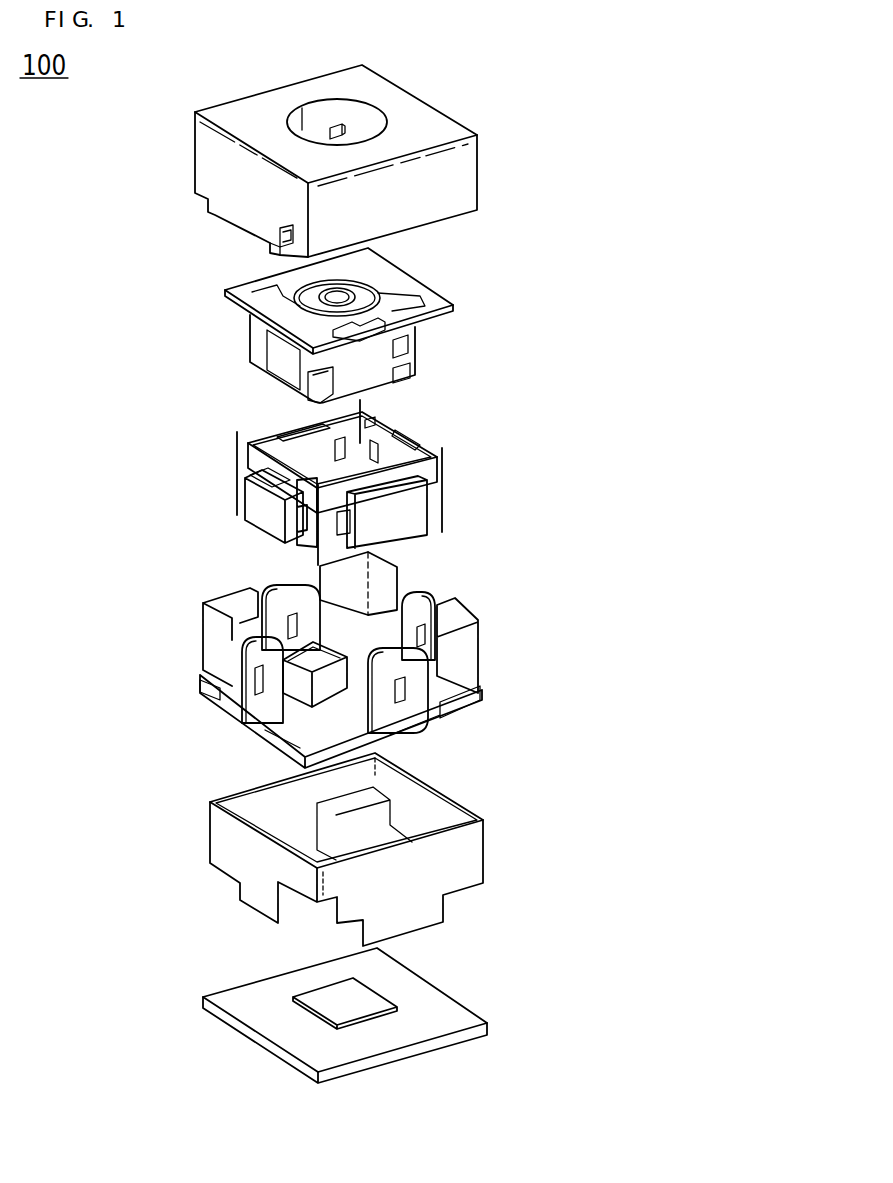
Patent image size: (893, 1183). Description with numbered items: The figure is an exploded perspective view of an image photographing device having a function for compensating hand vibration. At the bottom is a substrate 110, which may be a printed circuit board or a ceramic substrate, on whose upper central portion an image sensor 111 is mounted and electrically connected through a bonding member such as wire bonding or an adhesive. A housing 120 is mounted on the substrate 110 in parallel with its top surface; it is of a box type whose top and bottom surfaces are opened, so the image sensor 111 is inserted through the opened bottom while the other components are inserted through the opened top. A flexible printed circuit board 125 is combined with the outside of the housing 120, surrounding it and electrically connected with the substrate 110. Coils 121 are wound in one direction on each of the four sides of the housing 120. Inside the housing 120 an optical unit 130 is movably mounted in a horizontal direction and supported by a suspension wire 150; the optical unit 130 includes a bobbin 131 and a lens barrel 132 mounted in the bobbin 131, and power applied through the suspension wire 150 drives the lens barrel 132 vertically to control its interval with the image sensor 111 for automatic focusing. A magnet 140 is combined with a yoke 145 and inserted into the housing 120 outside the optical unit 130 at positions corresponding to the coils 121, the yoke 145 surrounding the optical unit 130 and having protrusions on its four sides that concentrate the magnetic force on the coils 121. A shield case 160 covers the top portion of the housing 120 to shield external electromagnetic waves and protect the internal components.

The substrate 110 is at (378, 1009).
The image sensor 111 is at (327, 992).
The housing 120 is at (382, 660).
The coils 121 is at (415, 682).
The flexible printed circuit board 125 is at (472, 861).
The optical unit 130 is at (376, 310).
The bobbin 131 is at (410, 273).
The lens barrel 132 is at (273, 292).
The magnet 140 is at (390, 528).
The yoke 145 is at (388, 452).
The suspension wire 150 is at (237, 455).
The shield case 160 is at (433, 113).